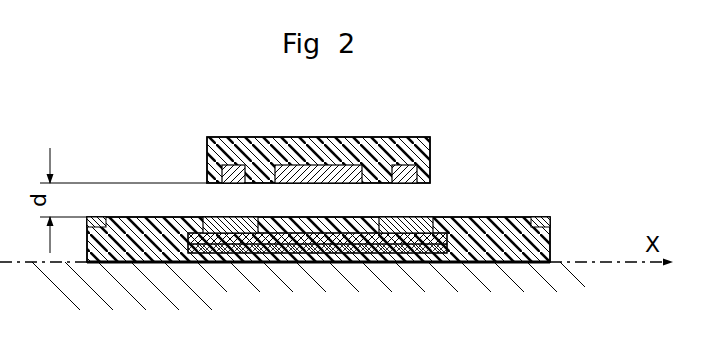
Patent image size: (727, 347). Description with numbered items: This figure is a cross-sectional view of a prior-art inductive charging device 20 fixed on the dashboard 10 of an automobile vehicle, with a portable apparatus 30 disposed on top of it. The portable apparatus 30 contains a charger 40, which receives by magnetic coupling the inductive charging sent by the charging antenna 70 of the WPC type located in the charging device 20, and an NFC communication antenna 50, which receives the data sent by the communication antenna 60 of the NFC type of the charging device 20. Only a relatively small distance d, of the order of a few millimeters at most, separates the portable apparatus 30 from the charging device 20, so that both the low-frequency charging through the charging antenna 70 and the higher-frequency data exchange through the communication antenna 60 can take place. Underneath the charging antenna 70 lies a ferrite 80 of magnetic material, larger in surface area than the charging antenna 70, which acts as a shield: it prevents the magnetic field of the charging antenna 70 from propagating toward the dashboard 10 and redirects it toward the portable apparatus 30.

The dashboard 10 is at (336, 286).
The inductive charging device 20 is at (550, 243).
The portable apparatus 30 is at (428, 152).
The charger 40 is at (332, 160).
The NFC communication antenna 50 is at (248, 158).
The communication antenna of the NFC type 60 is at (107, 217).
The charging antenna of the WPC type 70 is at (233, 215).
The ferrite 80 is at (317, 262).